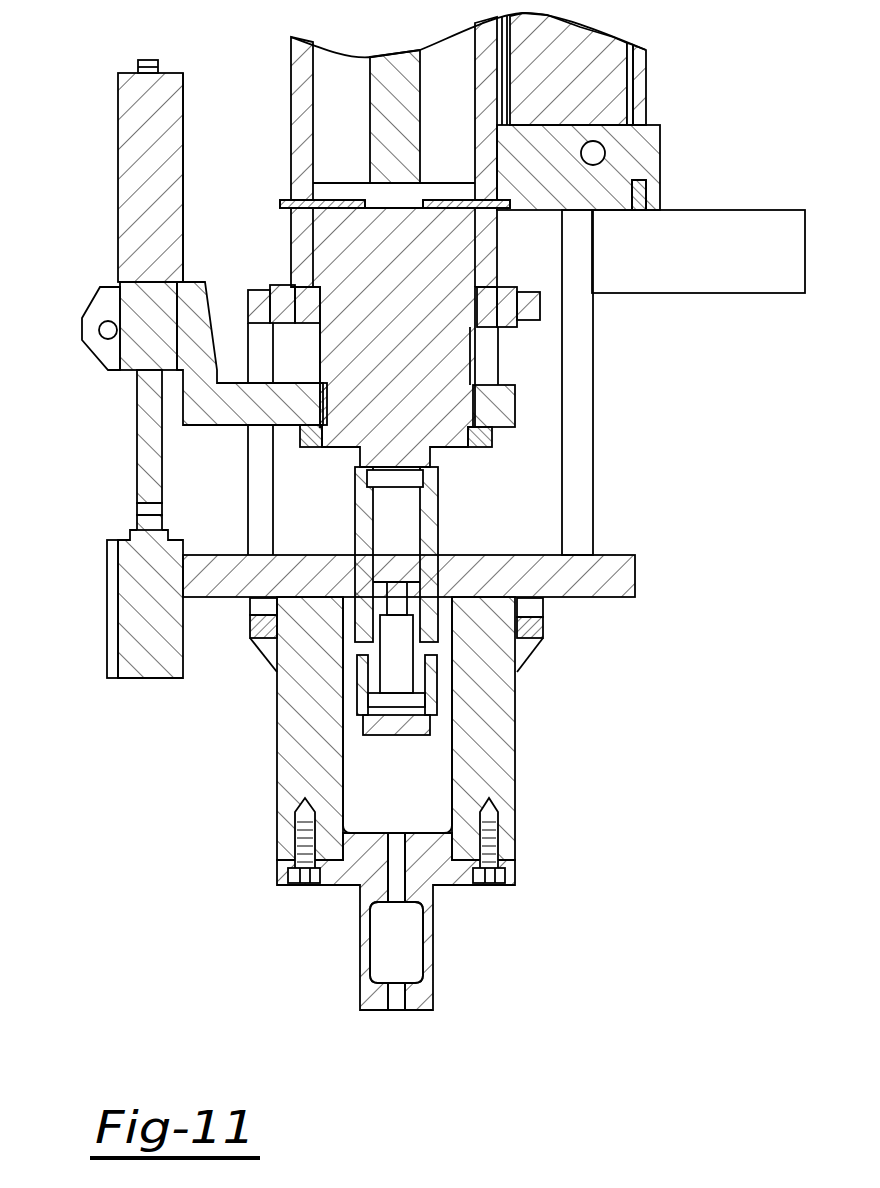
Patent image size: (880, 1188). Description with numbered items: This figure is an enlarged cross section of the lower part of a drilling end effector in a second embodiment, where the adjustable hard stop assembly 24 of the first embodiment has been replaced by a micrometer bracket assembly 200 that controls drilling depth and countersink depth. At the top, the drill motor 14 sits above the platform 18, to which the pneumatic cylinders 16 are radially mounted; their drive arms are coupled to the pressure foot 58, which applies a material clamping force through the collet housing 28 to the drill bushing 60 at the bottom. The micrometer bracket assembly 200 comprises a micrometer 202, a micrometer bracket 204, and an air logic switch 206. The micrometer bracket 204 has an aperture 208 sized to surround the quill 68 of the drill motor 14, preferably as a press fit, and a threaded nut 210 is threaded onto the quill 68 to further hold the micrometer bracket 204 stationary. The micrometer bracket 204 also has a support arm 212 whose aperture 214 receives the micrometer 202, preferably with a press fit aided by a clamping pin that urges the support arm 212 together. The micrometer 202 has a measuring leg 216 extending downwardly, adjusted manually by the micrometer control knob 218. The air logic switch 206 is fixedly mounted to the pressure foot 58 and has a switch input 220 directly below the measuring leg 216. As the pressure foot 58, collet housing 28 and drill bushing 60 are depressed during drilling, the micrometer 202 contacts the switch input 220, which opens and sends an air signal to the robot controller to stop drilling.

The drill motor 14 is at (487, 55).
The pneumatic cylinders 16 is at (646, 89).
The platform 18 is at (803, 263).
The adjustable hard stop assembly 24 is at (169, 476).
The collet housing 28 is at (515, 787).
The pressure foot 58 is at (635, 578).
The drill bushing 60 is at (433, 977).
The quill 68 is at (473, 348).
The micrometer bracket assembly 200 is at (150, 162).
The micrometer 202 is at (115, 112).
The micrometer bracket 204 is at (82, 332).
The air logic switch 206 is at (105, 655).
The aperture 208 is at (472, 385).
The threaded nut 210 is at (493, 430).
The support arm 212 is at (222, 298).
The aperture 214 is at (97, 302).
The measuring leg 216 is at (137, 437).
The micrometer control knob 218 is at (182, 146).
The switch input 220 is at (137, 520).